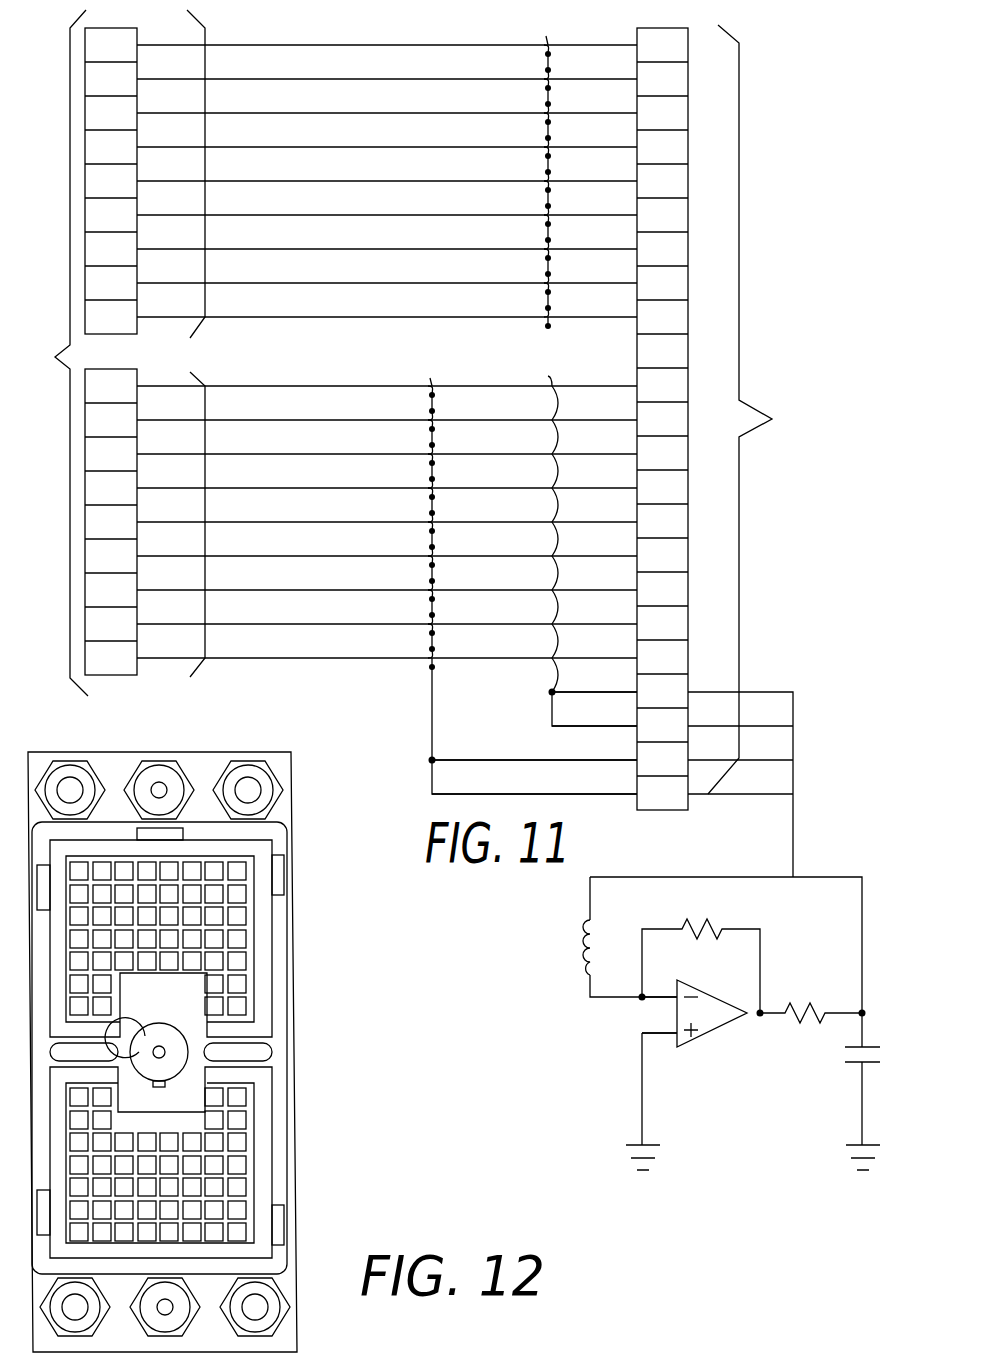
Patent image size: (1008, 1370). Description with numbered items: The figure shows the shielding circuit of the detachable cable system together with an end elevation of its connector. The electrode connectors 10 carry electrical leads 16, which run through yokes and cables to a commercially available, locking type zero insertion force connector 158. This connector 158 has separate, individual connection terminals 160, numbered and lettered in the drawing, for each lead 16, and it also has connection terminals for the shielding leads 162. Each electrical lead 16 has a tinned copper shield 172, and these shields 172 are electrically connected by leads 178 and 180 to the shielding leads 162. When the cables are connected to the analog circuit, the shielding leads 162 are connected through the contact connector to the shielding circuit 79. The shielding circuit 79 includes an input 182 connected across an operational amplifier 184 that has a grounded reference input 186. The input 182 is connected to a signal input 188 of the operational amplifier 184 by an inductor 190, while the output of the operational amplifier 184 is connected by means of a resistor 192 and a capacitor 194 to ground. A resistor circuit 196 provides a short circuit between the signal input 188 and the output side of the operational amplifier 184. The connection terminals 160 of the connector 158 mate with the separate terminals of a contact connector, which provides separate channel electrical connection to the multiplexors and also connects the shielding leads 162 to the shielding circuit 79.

In FIG. 11, the electrode connectors 10 is at (78, 353).
In FIG. 11, the electrical leads 16 is at (206, 183).
In FIG. 11, the tinned copper shields 172 is at (546, 36).
In FIG. 11, the lead 178 is at (554, 380).
In FIG. 11, the lead 180 is at (428, 670).
In FIG. 11, the shielding leads 162 is at (520, 760).
In FIG. 11, the connection terminals 160 is at (733, 417).
In FIG. 12, the connection terminals 160 is at (272, 945).
In FIG. 11, the input 182 is at (794, 832).
In FIG. 11, the shielding circuit 79 is at (596, 1041).
In FIG. 11, the operational amplifier 184 is at (716, 1030).
In FIG. 11, the grounded reference input 186 is at (660, 1033).
In FIG. 11, the signal input 188 is at (673, 990).
In FIG. 11, the inductor 190 is at (588, 945).
In FIG. 11, the resistor 192 is at (815, 997).
In FIG. 11, the capacitor 194 is at (846, 1055).
In FIG. 11, the resistor circuit 196 is at (712, 918).
In FIG. 12, the zero insertion force connector 158 is at (292, 840).